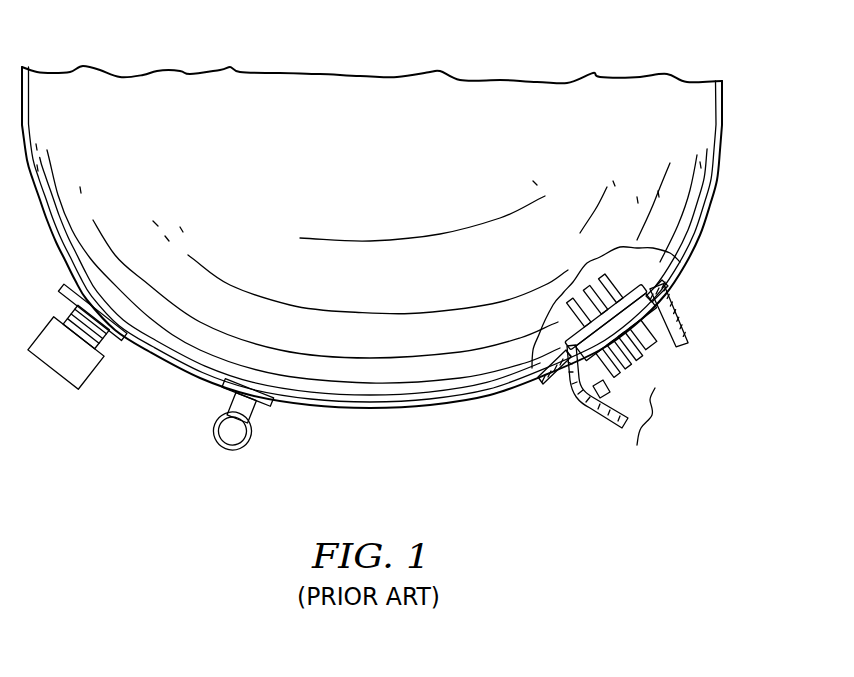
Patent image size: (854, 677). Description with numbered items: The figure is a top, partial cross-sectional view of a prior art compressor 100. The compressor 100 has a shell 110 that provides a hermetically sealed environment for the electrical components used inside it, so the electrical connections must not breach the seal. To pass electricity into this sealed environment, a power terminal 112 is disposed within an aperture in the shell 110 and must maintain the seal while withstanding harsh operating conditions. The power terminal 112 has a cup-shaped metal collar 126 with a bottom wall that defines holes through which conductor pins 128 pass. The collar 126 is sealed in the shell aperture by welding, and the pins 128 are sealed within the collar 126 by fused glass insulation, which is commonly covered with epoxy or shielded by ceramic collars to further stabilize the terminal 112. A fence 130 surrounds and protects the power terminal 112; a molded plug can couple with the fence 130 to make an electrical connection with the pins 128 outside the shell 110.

The compressor 100 is at (398, 73).
The shell 110 is at (418, 211).
The power terminal 112 is at (680, 393).
The cup-shaped metal collar 126 is at (597, 282).
The conductor pins 128 is at (637, 430).
The fence 130 is at (712, 335).